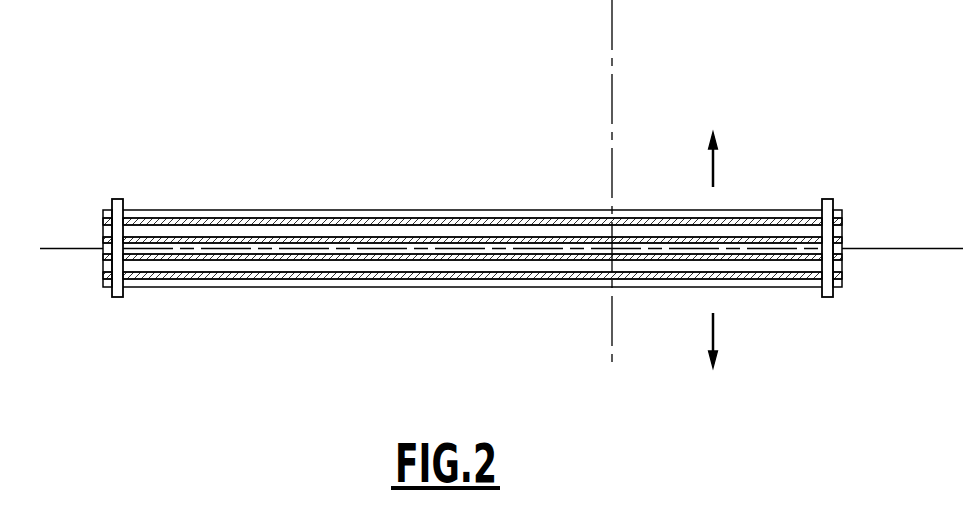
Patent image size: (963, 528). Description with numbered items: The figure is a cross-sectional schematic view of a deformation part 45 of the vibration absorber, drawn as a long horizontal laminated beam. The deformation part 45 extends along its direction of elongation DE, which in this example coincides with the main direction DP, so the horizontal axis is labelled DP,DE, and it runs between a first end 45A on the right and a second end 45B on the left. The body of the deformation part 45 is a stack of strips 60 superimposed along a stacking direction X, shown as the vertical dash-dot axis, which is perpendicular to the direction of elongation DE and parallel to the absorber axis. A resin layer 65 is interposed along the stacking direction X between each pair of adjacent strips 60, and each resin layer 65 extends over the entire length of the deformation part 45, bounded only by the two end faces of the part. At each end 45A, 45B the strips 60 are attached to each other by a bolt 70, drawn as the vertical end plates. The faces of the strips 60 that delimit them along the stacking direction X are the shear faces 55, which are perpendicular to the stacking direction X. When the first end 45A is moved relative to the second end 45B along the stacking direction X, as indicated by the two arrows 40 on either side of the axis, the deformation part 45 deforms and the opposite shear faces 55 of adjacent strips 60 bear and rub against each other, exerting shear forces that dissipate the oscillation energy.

The arrows 40 is at (726, 250).
The deformation part 45 is at (472, 261).
The first end 45A is at (876, 297).
The second end 45B is at (84, 189).
The shear faces 55 is at (379, 207).
The strips 60 is at (257, 210).
The resin layer 65 is at (243, 287).
The bolt 70 is at (116, 297).
The stacking direction X is at (603, 183).
The main direction and direction of elongation DP,DE is at (58, 249).